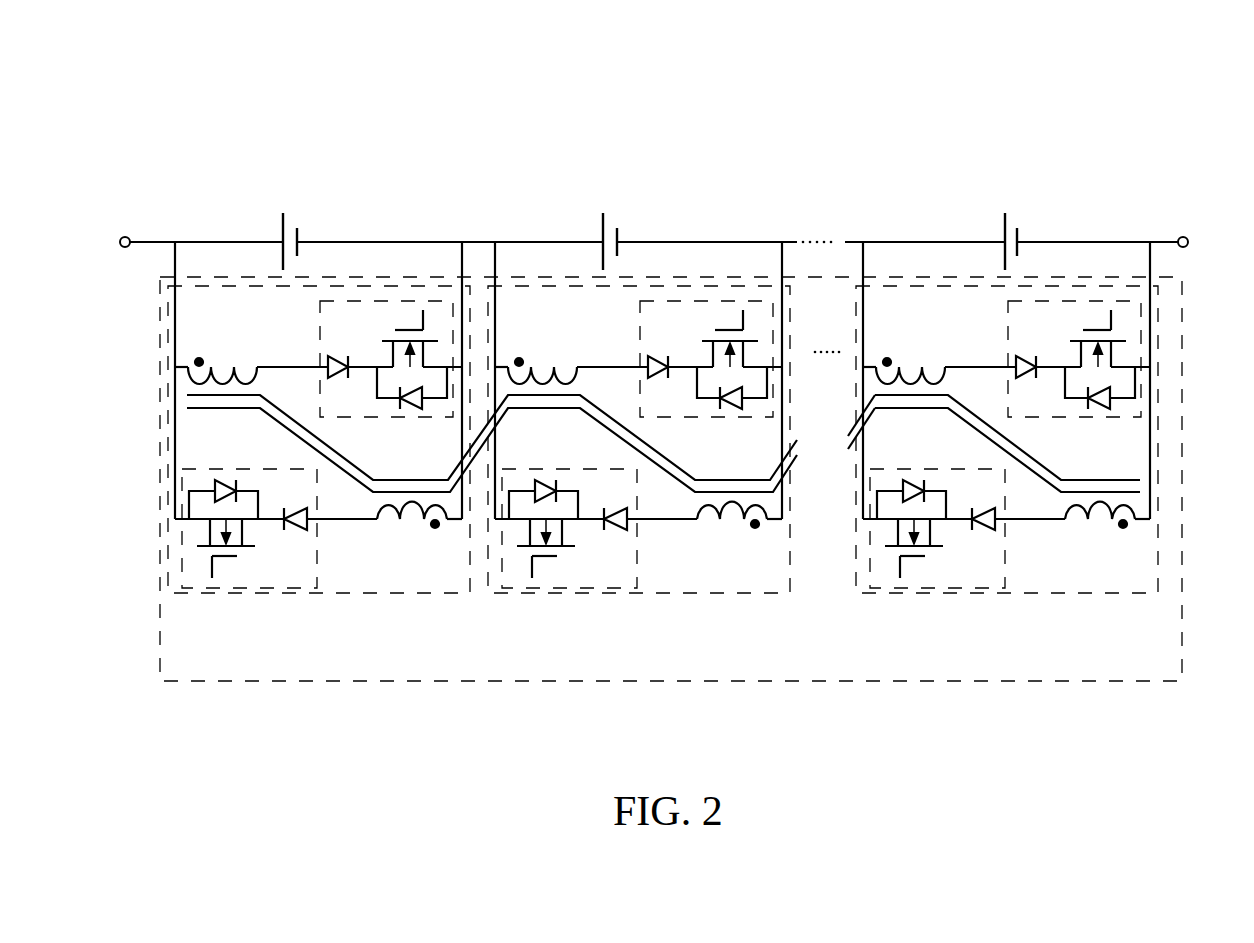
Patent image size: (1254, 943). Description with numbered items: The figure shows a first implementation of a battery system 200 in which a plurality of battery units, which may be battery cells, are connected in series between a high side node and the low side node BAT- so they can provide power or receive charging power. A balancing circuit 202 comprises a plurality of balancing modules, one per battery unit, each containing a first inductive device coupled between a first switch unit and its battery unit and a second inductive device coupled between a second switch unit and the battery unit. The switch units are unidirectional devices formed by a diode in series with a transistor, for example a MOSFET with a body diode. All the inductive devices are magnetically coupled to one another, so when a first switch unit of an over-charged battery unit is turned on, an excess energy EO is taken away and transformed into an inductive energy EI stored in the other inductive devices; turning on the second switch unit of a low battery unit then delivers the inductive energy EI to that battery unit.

The battery system 200 is at (1088, 132).
The balancing circuit 202 is at (160, 432).
The node BAT− BAT- is at (1190, 225).
The excess energy EO is at (280, 378).
The inductive energy EI is at (762, 462).